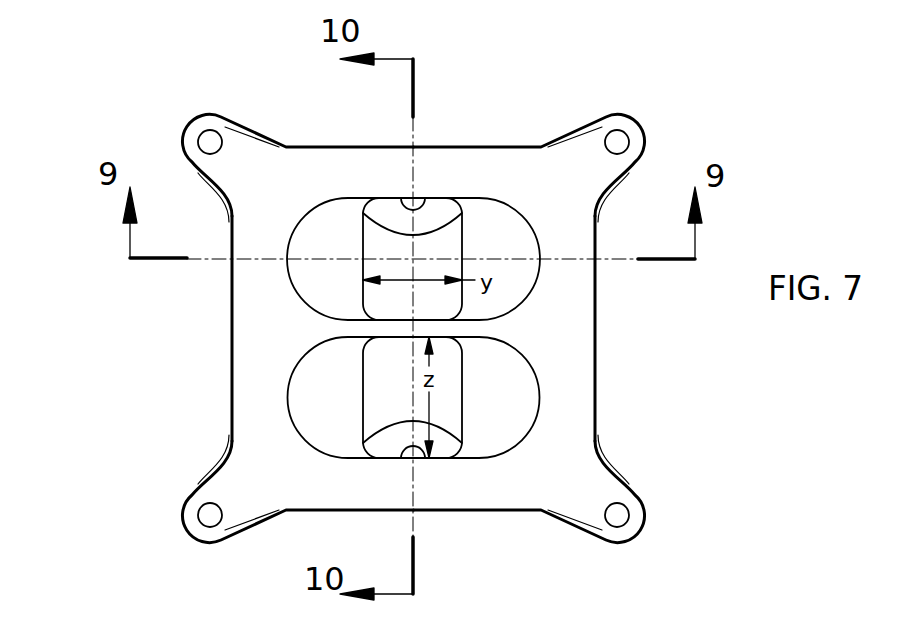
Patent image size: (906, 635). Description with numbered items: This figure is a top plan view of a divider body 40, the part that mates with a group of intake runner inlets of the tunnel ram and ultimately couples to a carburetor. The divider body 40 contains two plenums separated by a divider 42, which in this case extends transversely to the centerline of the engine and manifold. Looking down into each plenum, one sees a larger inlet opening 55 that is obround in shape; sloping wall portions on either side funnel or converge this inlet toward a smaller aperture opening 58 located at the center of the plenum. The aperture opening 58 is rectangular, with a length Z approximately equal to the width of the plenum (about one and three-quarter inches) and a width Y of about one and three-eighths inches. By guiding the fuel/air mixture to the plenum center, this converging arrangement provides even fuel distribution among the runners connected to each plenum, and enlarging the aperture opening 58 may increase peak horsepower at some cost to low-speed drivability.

The divider body 40 is at (509, 328).
The divider 42 is at (442, 327).
The inlet opening 55 is at (523, 262).
The aperture opening 58 is at (471, 306).